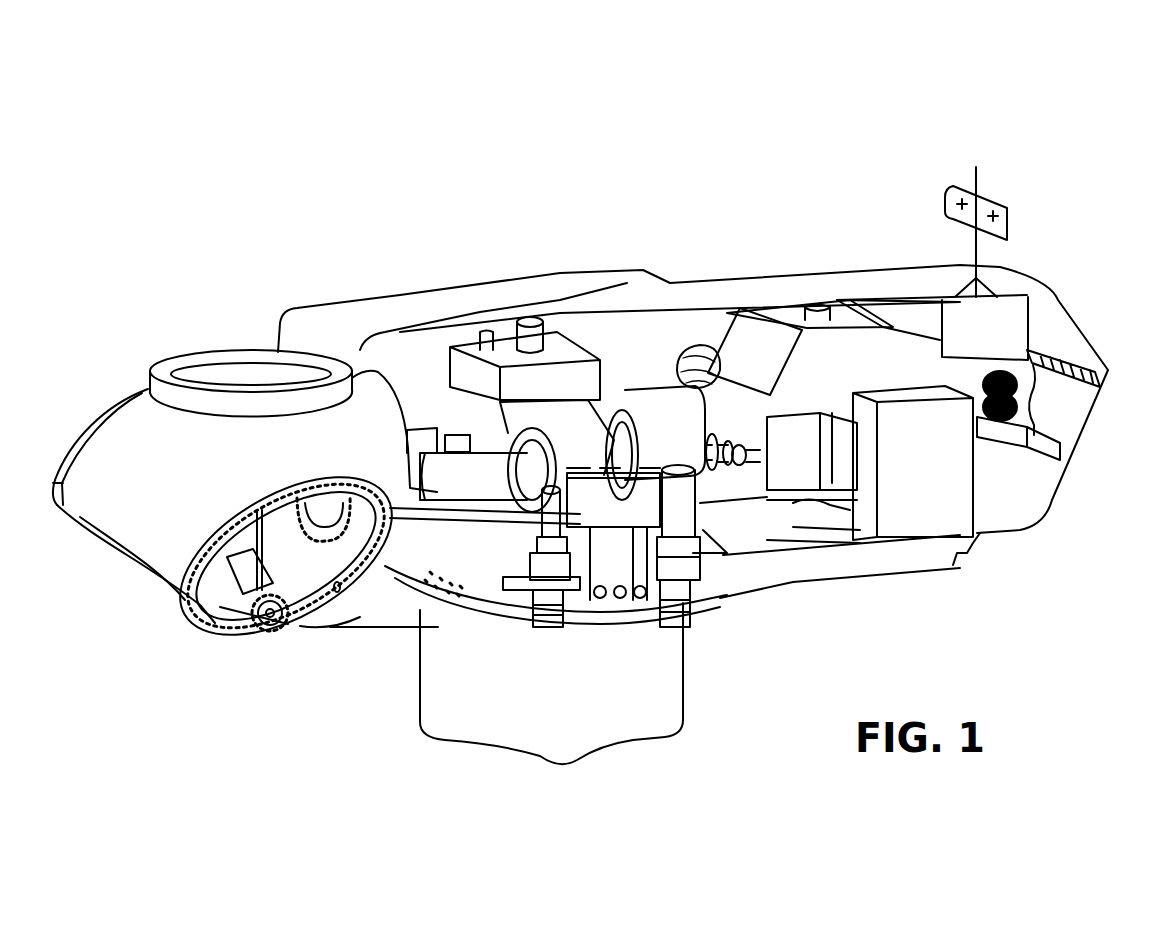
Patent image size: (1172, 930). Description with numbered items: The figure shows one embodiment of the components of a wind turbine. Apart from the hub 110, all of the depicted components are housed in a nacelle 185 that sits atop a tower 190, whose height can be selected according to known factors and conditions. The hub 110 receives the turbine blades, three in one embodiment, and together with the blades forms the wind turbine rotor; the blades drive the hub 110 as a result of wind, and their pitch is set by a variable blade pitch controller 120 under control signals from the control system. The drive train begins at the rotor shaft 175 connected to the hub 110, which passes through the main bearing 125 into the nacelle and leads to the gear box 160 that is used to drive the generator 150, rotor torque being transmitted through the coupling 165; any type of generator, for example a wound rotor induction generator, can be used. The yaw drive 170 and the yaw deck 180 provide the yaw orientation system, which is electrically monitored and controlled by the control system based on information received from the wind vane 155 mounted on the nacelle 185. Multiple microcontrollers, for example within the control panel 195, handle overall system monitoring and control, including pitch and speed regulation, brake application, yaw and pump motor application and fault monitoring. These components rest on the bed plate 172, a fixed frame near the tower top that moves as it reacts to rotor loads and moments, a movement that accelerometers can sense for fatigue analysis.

The hub 110 is at (197, 400).
The variable blade pitch controller 120 is at (240, 628).
The main bearing 125 is at (416, 497).
The generator 150 is at (787, 478).
The wind vane 155 is at (1005, 207).
The gear box 160 is at (615, 450).
The coupling 165 is at (712, 440).
The yaw drive 170 is at (547, 633).
The bed plate 172 is at (888, 575).
The rotor shaft 175 is at (434, 500).
The yaw deck 180 is at (719, 550).
The nacelle 185 is at (349, 322).
The tower 190 is at (651, 723).
The control panel 195 is at (905, 420).